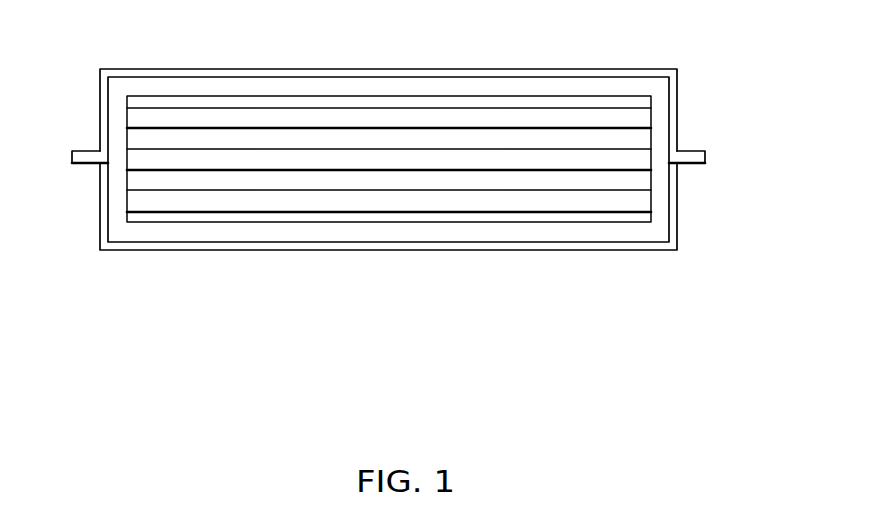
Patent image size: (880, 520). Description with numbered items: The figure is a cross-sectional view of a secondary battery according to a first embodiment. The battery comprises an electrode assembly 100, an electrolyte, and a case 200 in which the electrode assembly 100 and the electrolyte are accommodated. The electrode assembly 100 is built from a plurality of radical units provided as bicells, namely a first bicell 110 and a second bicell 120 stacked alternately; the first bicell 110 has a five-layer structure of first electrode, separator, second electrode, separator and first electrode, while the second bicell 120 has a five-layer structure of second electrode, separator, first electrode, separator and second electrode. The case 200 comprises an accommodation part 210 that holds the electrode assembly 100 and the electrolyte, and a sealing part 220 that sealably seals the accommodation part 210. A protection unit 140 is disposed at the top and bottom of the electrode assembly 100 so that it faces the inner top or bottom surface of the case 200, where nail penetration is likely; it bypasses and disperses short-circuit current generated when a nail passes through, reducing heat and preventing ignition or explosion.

The electrode assembly 100 is at (564, 78).
The first bicell 110 is at (127, 118).
The second bicell 120 is at (126, 141).
The protection unit 140 is at (652, 103).
The case 200 is at (484, 52).
The accommodation part 210 is at (678, 115).
The sealing part 220 is at (694, 166).